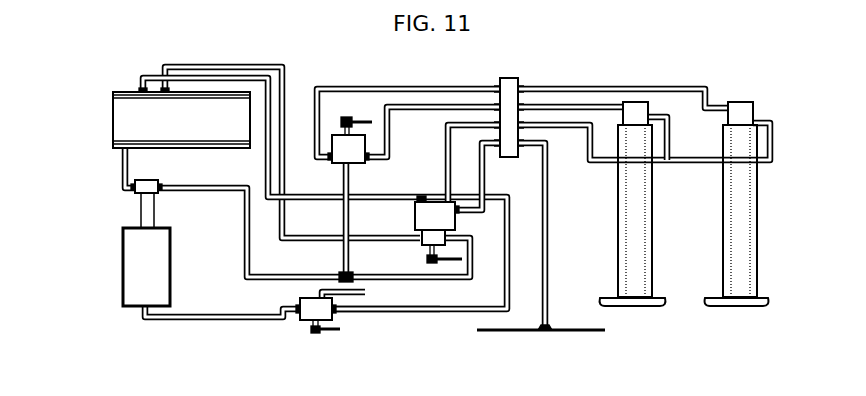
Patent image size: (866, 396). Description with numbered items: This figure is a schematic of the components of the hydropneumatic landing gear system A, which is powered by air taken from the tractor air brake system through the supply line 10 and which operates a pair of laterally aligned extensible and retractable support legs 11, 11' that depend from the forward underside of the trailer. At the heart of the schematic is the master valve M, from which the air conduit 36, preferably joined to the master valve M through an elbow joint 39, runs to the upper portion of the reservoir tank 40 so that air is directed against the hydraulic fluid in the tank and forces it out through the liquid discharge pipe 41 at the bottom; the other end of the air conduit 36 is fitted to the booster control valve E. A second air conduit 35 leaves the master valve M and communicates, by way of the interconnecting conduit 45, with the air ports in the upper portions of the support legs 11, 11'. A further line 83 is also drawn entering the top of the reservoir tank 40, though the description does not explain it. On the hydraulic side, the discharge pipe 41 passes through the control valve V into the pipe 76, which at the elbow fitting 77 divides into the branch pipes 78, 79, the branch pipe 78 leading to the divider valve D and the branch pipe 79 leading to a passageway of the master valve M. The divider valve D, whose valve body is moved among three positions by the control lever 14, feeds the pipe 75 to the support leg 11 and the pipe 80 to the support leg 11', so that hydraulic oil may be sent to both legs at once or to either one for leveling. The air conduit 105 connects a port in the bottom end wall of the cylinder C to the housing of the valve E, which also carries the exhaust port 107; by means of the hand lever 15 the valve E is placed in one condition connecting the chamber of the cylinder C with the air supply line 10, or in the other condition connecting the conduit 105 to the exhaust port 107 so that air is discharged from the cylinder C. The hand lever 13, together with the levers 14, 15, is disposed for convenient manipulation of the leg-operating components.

The air supply line 10 is at (548, 285).
The support leg 11 is at (645, 204).
The support leg 11' is at (752, 204).
The hand lever 13 is at (462, 260).
The control lever 14 is at (351, 117).
The hand lever 15 is at (319, 331).
The air conduit 35 is at (447, 158).
The air conduit 36 is at (388, 190).
The elbow joint 39 is at (428, 186).
The reservoir tank 40 is at (118, 115).
The liquid discharge pipe 41 is at (123, 168).
The interconnecting conduit 45 is at (692, 163).
The pipe 75 is at (423, 110).
The pipe 76 is at (193, 190).
The elbow fitting 77 is at (342, 273).
The branch pipe 78 is at (344, 218).
The branch pipe 79 is at (385, 283).
The pipe 80 is at (610, 88).
The pipe 83 is at (212, 67).
The air conduit 105 is at (212, 319).
The exhaust port 107 is at (320, 293).
The hydropneumatic system A is at (532, 68).
The cylinder C is at (122, 262).
The divider valve D is at (333, 160).
The booster control valve E is at (300, 320).
The master valve M is at (453, 220).
The control valve V is at (150, 181).